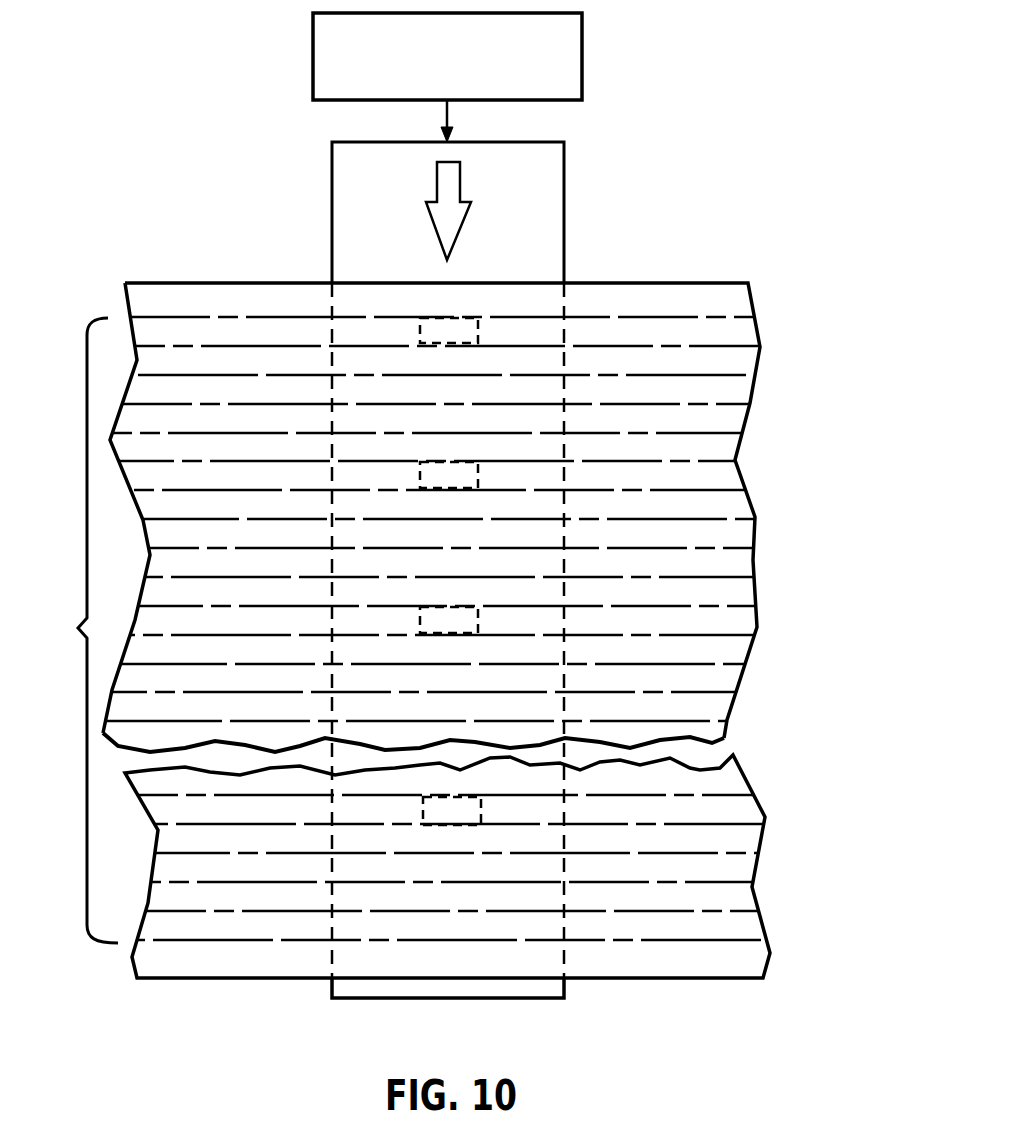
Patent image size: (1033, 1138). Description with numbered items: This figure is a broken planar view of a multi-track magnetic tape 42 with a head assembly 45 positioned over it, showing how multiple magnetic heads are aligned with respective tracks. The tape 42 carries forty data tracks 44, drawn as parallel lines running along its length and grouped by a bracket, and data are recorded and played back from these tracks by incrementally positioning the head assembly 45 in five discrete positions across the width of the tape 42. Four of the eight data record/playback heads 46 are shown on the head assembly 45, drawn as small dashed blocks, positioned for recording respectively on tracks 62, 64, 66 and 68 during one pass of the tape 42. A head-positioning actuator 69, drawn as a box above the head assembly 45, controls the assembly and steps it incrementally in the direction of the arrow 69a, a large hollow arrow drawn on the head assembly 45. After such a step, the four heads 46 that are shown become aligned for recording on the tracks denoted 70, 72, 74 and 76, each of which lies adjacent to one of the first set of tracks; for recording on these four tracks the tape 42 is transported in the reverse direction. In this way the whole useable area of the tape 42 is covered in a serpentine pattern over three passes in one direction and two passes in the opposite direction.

The head-positioning actuator 69 is at (582, 72).
The arrow 69a is at (428, 207).
The head assembly 45 is at (564, 215).
The tape 42 is at (692, 283).
The data tracks 44 is at (77, 630).
The data record/playback heads 46 is at (445, 316).
The track 62 is at (728, 330).
The track 70 is at (733, 358).
The track 64 is at (722, 477).
The track 72 is at (727, 510).
The track 66 is at (727, 620).
The track 74 is at (727, 652).
The track 68 is at (737, 808).
The track 76 is at (735, 838).